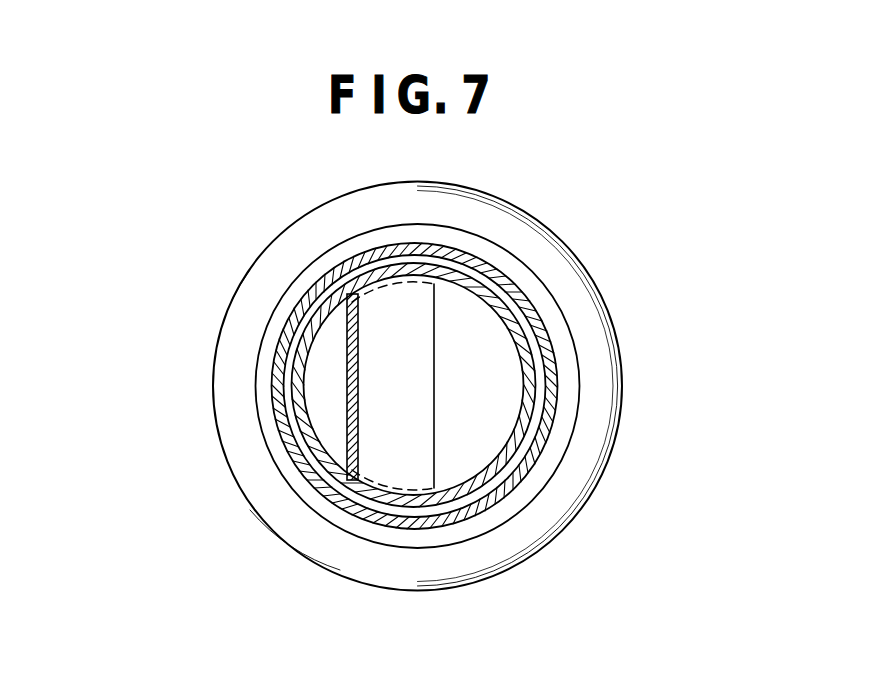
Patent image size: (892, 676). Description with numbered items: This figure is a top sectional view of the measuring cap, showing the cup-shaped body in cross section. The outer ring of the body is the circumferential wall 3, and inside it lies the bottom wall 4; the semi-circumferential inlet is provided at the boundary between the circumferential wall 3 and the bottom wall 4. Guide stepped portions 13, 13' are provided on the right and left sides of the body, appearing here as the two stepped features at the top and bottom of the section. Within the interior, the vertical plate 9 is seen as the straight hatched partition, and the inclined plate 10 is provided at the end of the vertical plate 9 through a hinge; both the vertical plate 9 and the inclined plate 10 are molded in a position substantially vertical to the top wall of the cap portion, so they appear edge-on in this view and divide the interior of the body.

The circumferential wall 3 is at (542, 381).
The bottom wall 4 is at (496, 461).
The vertical plate 9 is at (348, 416).
The inclined plate 10 is at (414, 399).
The guide stepped portion 13 is at (371, 557).
The guide stepped portion 13' is at (330, 242).